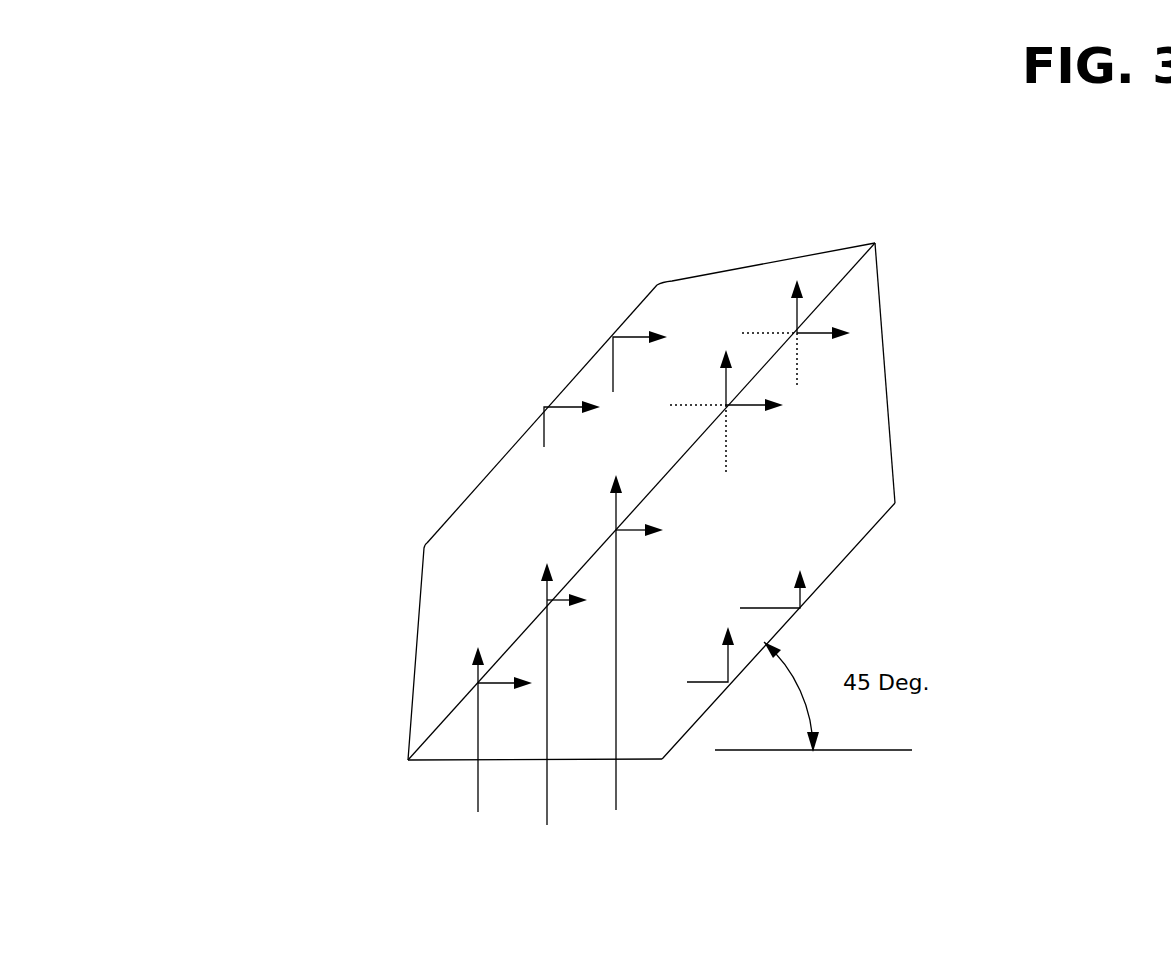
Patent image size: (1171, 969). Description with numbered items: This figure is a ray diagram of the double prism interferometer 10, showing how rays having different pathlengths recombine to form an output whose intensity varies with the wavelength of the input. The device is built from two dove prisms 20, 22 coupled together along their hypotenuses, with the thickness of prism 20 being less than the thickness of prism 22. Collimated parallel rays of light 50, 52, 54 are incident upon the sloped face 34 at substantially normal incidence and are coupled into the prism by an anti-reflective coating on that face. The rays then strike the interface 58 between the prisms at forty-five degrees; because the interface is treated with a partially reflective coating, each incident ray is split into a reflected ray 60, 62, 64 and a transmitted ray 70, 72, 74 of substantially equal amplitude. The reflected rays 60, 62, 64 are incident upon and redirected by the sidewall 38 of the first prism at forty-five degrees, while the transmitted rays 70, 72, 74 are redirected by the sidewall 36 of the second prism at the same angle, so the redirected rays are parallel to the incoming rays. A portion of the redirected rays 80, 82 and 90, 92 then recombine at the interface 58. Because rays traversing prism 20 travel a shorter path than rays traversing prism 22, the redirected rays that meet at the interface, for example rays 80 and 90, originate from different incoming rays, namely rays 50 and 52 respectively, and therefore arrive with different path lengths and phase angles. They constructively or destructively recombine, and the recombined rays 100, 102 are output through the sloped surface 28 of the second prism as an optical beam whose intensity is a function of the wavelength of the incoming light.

The apparatus 10 is at (452, 342).
The dove prism 20 is at (435, 617).
The dove prism 22 is at (837, 570).
The inclined end face 28 is at (752, 272).
The inclined end face 34 is at (408, 761).
The outboard face 36 is at (447, 520).
The outboard face 38 is at (895, 503).
The incoming parallel ray 50 is at (467, 783).
The incoming parallel ray 52 is at (548, 787).
The incoming parallel ray 54 is at (627, 772).
The interface 58 is at (672, 475).
The reflected ray 60 is at (487, 690).
The reflected ray 62 is at (570, 595).
The reflected ray 64 is at (637, 523).
The transmitted ray 70 is at (478, 672).
The transmitted ray 72 is at (547, 588).
The transmitted ray 74 is at (616, 503).
The redirected ray 80 is at (725, 655).
The redirected ray 82 is at (797, 590).
The redirected ray 90 is at (558, 404).
The redirected ray 92 is at (637, 332).
The recombined ray 100 is at (722, 378).
The recombined ray 102 is at (797, 320).